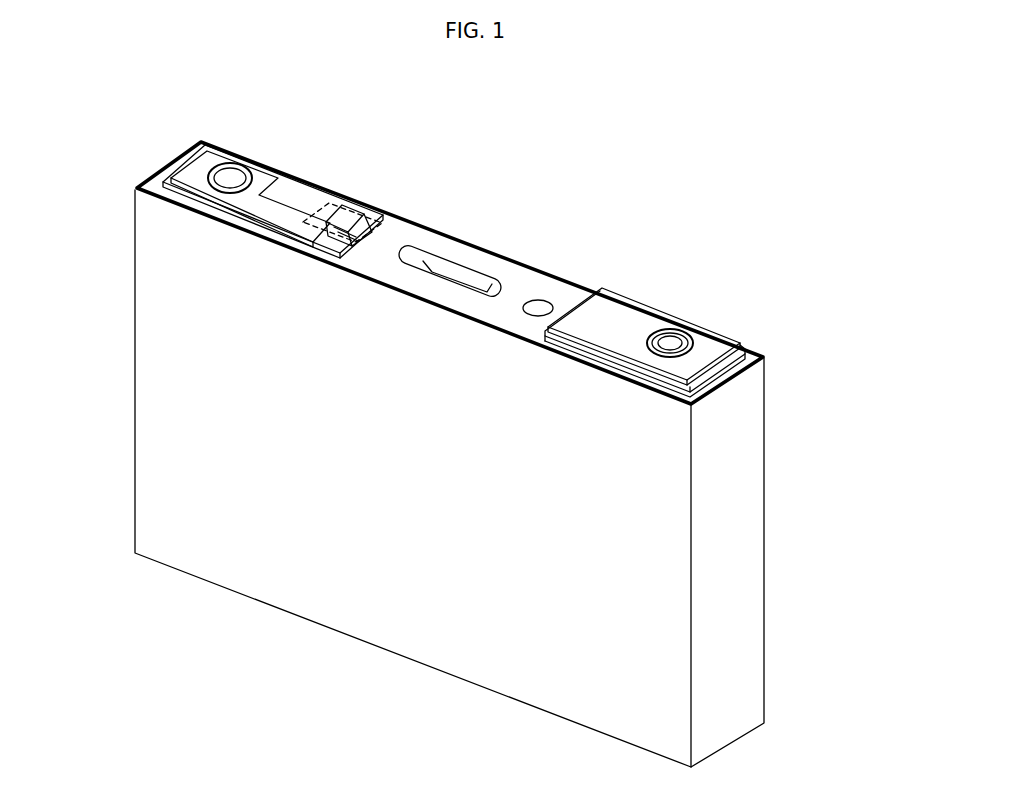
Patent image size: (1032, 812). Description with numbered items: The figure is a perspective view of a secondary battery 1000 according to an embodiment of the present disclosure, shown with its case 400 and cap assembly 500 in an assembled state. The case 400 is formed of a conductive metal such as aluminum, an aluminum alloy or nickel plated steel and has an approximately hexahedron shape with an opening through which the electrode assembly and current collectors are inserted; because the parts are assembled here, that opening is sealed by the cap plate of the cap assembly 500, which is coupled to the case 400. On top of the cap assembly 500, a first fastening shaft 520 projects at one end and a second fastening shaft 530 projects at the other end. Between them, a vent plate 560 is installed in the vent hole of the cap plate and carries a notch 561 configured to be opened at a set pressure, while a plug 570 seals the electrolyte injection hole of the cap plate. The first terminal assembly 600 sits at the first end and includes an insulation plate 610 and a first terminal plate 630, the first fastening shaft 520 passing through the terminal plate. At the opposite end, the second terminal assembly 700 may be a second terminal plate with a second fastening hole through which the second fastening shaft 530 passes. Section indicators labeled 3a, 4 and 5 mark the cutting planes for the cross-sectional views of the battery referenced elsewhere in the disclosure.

The secondary battery 1000 is at (826, 264).
The case 400 is at (753, 565).
The cap assembly 500 is at (525, 263).
The first fastening shaft 520 is at (233, 176).
The second fastening shaft 530 is at (673, 338).
The vent plate 560 is at (468, 234).
The notch 561 is at (433, 268).
The plug 570 is at (540, 303).
The first terminal assembly 600 is at (398, 146).
The insulation plate 610 is at (357, 210).
The first terminal plate 630 is at (277, 173).
The second terminal assembly 700 is at (628, 306).
The section line 3a is at (57, 133).
The section line 4 is at (145, 147).
The section line 5 is at (356, 245).